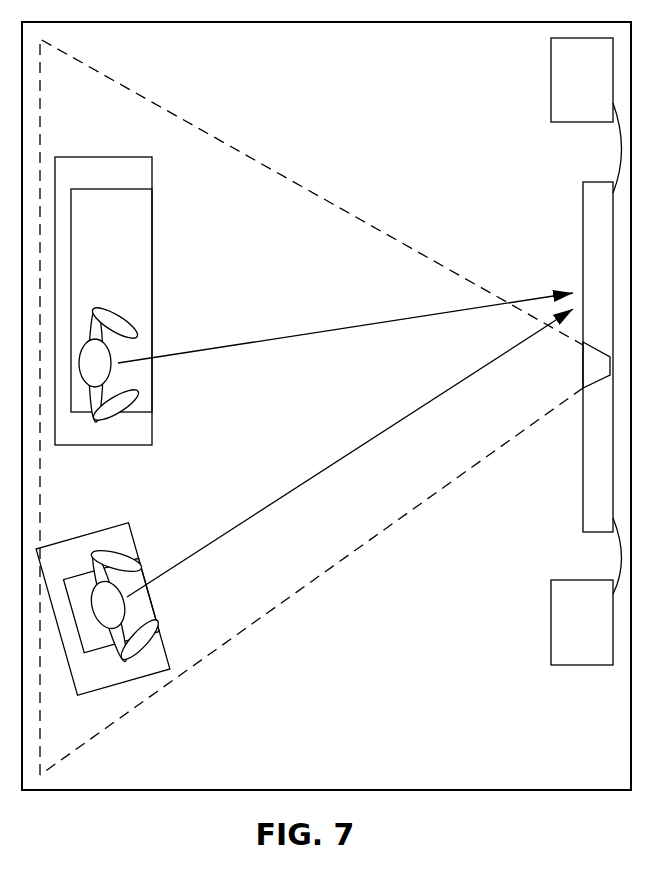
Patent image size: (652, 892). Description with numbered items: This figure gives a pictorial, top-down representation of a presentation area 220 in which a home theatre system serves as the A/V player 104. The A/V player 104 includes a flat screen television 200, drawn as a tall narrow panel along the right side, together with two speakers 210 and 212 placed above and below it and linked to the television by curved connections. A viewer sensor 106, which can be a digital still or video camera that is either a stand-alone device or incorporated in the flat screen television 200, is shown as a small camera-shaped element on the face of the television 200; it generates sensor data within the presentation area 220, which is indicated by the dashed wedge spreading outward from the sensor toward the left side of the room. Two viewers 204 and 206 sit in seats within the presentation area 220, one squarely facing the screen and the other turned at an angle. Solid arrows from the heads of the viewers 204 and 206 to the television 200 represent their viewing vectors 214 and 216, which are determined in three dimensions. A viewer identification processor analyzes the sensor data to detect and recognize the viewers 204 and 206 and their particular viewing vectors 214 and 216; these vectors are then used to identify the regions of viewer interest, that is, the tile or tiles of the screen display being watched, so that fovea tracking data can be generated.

The A/V player 104 is at (548, 222).
The viewer sensor 106 is at (598, 338).
The flat screen television 200 is at (602, 182).
The viewer 204 is at (123, 307).
The viewer 206 is at (113, 547).
The speaker 210 is at (582, 80).
The speaker 212 is at (582, 622).
The viewing vector 214 is at (345, 328).
The viewing vector 216 is at (350, 453).
The presentation area 220 is at (232, 147).